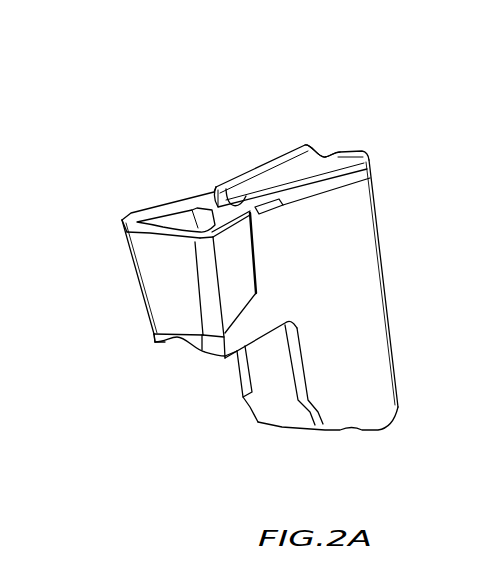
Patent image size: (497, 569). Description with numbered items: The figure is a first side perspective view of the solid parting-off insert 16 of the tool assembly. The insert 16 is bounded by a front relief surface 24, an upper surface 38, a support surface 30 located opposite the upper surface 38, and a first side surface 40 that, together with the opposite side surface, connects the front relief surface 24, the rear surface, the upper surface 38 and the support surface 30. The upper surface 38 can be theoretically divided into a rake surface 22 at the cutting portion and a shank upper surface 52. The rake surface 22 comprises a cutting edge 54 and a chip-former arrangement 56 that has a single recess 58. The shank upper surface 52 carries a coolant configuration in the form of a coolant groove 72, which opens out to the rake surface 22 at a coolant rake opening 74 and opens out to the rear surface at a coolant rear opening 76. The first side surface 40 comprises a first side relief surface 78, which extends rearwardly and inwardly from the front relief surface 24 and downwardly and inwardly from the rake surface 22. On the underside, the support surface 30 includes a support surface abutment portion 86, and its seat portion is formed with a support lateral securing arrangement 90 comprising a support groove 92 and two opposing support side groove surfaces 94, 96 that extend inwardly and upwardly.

The parting-off insert 16 is at (170, 76).
The rake surface 22 is at (172, 188).
The front relief surface 24 is at (158, 290).
The support surface 30 is at (383, 437).
The upper surface 38 is at (255, 152).
The first side surface 40 is at (350, 278).
The shank upper surface 52 is at (230, 155).
The cutting edge 54 is at (122, 212).
The chip-former arrangement 56 is at (183, 218).
The recess 58 is at (195, 219).
The coolant groove 72 is at (289, 168).
The coolant rake opening 74 is at (244, 202).
The coolant rear opening 76 is at (328, 157).
The first side relief surface 78 is at (240, 263).
The support surface abutment portion 86 is at (277, 380).
The support lateral securing arrangement 90 is at (217, 404).
The support groove 92 is at (180, 362).
The support side groove surface 94 is at (156, 345).
The support side groove surface 96 is at (201, 352).